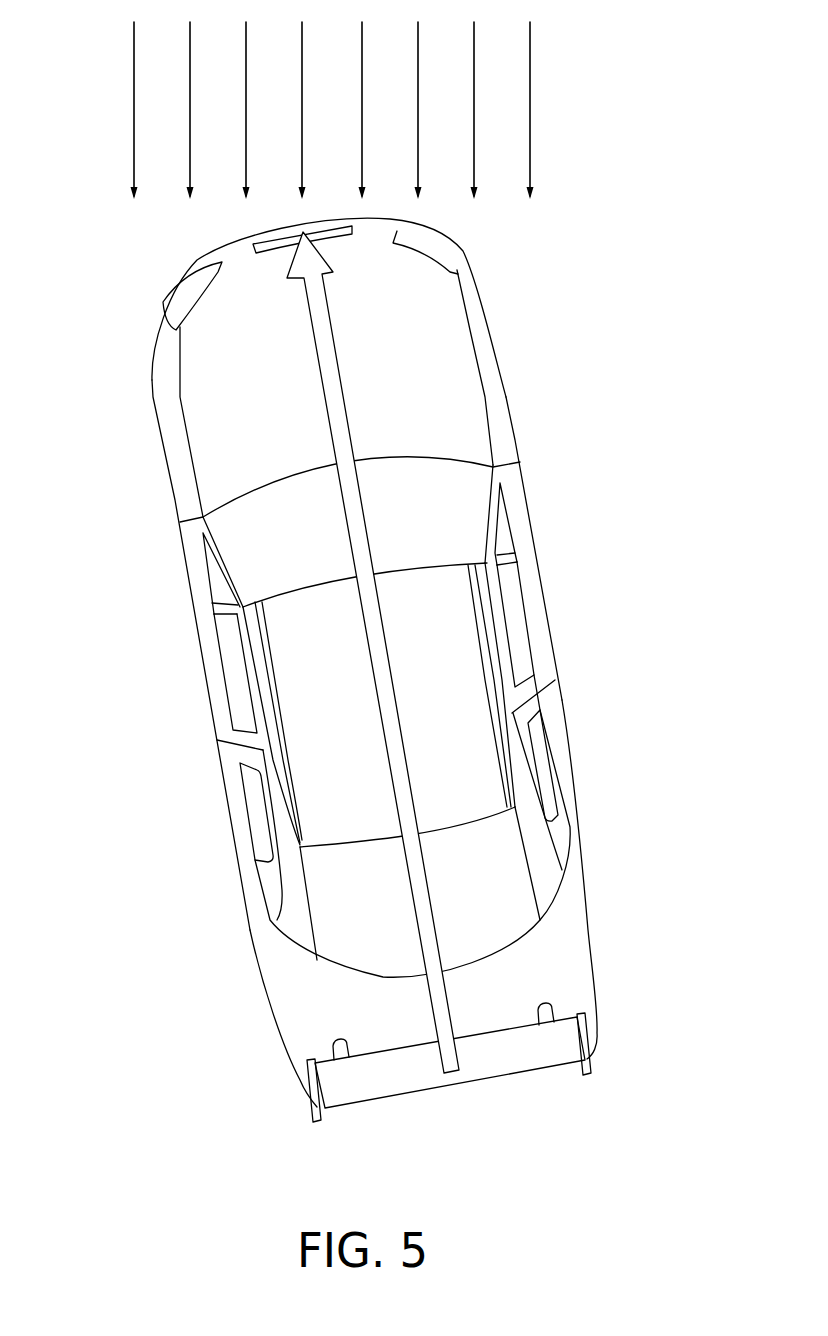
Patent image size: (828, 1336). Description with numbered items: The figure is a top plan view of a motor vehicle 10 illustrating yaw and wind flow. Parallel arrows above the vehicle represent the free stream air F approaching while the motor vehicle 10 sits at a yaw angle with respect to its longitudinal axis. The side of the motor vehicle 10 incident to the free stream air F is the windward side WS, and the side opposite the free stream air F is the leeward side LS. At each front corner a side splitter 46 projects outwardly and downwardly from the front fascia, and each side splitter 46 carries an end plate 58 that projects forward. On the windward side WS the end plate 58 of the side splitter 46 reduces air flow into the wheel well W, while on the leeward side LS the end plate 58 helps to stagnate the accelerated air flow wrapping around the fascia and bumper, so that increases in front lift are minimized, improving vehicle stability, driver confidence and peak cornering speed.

The motor vehicle 10 is at (188, 748).
The side splitter 46 is at (487, 268).
The end plate 58 is at (163, 303).
The free stream air F is at (530, 115).
The wheel well W is at (502, 348).
The windward side WS is at (545, 607).
The leeward side LS is at (198, 640).